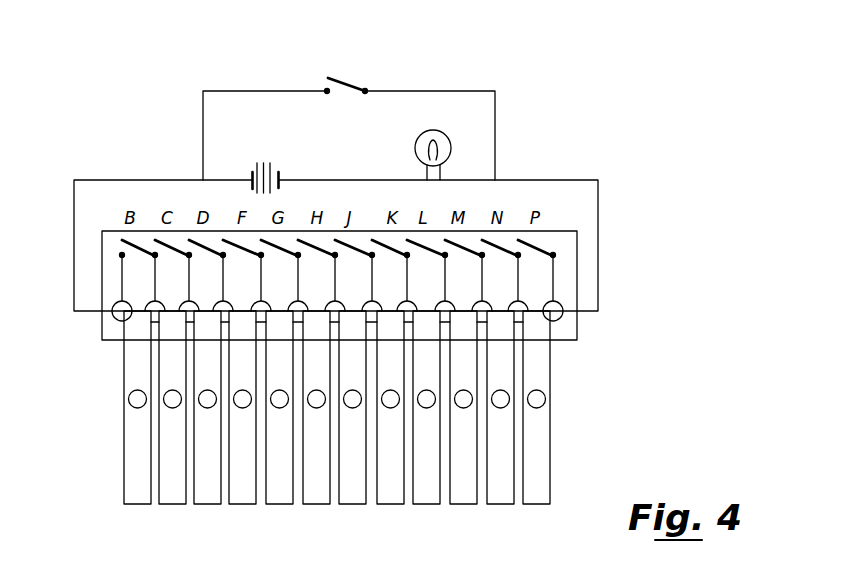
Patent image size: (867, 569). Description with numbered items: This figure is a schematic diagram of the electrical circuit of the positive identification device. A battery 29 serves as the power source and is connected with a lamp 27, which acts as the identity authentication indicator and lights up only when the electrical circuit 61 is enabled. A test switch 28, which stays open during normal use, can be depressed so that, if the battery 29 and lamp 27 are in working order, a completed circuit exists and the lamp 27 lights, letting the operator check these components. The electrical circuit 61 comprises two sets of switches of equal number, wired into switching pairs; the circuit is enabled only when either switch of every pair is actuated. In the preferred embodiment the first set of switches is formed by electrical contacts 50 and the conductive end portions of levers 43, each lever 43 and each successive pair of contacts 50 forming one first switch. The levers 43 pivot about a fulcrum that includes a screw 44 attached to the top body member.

The lamp 27 is at (451, 148).
The test switch 28 is at (345, 77).
The battery 29 is at (250, 172).
The lever 43 is at (280, 497).
The screw 44 is at (128, 401).
The electrical contacts 50 is at (113, 314).
The electrical circuit 61 is at (567, 340).